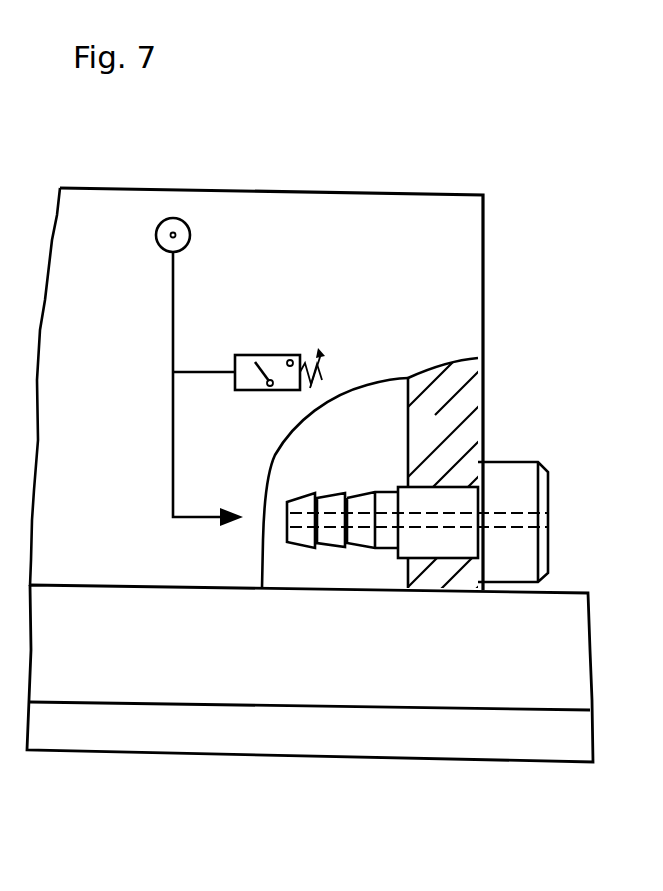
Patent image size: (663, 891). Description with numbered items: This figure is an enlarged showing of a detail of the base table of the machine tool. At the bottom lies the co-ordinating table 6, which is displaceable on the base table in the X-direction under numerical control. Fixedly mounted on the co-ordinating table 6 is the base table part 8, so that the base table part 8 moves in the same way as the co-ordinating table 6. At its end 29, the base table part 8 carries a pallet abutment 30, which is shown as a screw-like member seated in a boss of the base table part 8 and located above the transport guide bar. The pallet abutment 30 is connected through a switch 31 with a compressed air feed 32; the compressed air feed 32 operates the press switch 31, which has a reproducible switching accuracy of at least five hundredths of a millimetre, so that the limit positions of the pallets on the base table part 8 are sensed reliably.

The co-ordinating table 6 is at (480, 690).
The base table part 8 is at (450, 309).
The end of the base table part 29 is at (483, 267).
The pallet abutment 30 is at (508, 471).
The switch 31 is at (275, 358).
The compressed air feed 32 is at (190, 227).